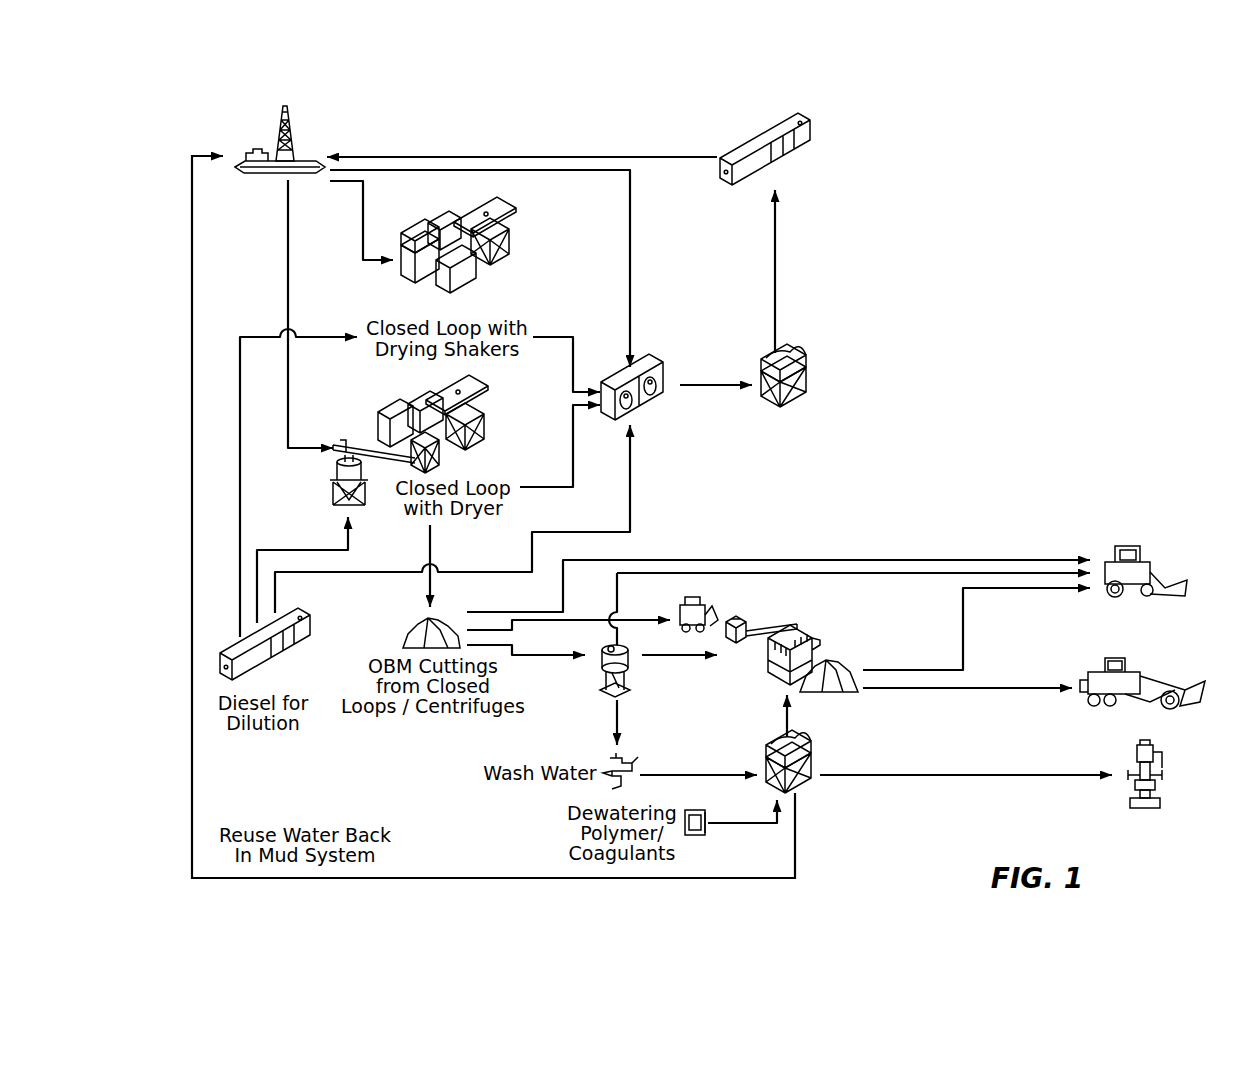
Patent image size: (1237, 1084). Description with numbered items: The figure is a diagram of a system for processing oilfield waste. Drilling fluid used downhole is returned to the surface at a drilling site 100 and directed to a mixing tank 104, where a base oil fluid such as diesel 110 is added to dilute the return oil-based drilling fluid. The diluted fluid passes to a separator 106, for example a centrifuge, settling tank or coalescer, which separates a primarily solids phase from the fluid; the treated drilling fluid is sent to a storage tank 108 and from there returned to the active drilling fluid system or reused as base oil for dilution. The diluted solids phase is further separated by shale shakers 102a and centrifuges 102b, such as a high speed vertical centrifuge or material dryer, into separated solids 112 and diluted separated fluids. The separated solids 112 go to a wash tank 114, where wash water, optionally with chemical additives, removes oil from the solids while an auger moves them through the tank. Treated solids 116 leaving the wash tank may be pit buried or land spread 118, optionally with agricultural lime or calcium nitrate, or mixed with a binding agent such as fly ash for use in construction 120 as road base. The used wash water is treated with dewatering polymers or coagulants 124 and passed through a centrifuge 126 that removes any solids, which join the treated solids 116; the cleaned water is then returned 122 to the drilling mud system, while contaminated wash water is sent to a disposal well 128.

The drilling site 100 is at (262, 130).
The shale shakers 102a is at (500, 210).
The centrifuges 102b is at (390, 405).
The mixing tank 104 is at (660, 372).
The separator 106 is at (800, 385).
The storage tank 108 is at (790, 130).
The diesel tank for dilution 110 is at (300, 620).
The separated solids 112 is at (413, 632).
The wash tank 114 is at (625, 692).
The treated solids 116 is at (805, 632).
The land spread 118 is at (1127, 543).
The construction 120 is at (1127, 657).
The returned wash water 122 is at (295, 878).
The dewatering polymers or coagulants 124 is at (697, 838).
The centrifuge 126 is at (805, 745).
The disposal well 128 is at (1160, 780).